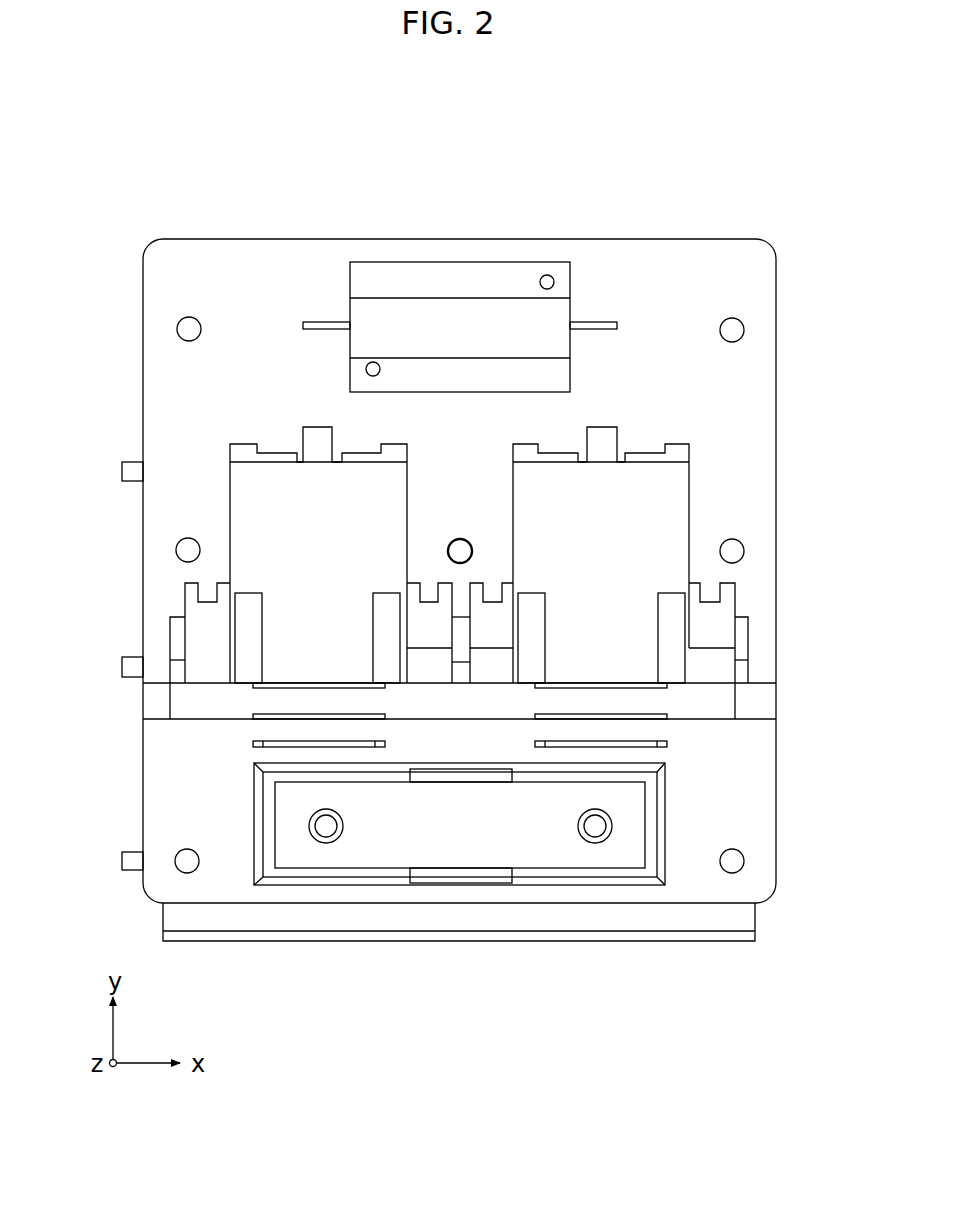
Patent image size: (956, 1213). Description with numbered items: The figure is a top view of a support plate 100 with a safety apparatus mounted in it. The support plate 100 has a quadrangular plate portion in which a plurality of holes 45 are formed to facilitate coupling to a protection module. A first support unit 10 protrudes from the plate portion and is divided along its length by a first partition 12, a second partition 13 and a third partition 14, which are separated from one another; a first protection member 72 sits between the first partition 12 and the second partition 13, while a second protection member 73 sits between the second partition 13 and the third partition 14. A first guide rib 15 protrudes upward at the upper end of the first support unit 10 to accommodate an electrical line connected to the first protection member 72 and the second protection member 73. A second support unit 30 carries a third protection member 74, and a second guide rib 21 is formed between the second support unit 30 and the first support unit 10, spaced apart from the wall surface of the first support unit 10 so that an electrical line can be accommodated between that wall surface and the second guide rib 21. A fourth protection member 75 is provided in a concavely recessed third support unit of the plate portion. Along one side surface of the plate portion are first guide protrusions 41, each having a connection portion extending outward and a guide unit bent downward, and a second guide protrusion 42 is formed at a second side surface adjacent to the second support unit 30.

The support plate 100 is at (140, 201).
The first support unit 10 is at (733, 704).
The first partition 12 is at (746, 635).
The second partition 13 is at (457, 635).
The third partition 14 is at (176, 637).
The first guide rib 15 is at (663, 706).
The second guide rib 21 is at (267, 747).
The second support unit 30 is at (459, 885).
The first guide protrusion 41 is at (122, 471).
The second guide protrusion 42 is at (583, 941).
The holes 45 is at (190, 317).
The first protection member 72 is at (680, 498).
The second protection member 73 is at (245, 519).
The third protection member 74 is at (463, 848).
The fourth protection member 75 is at (452, 275).